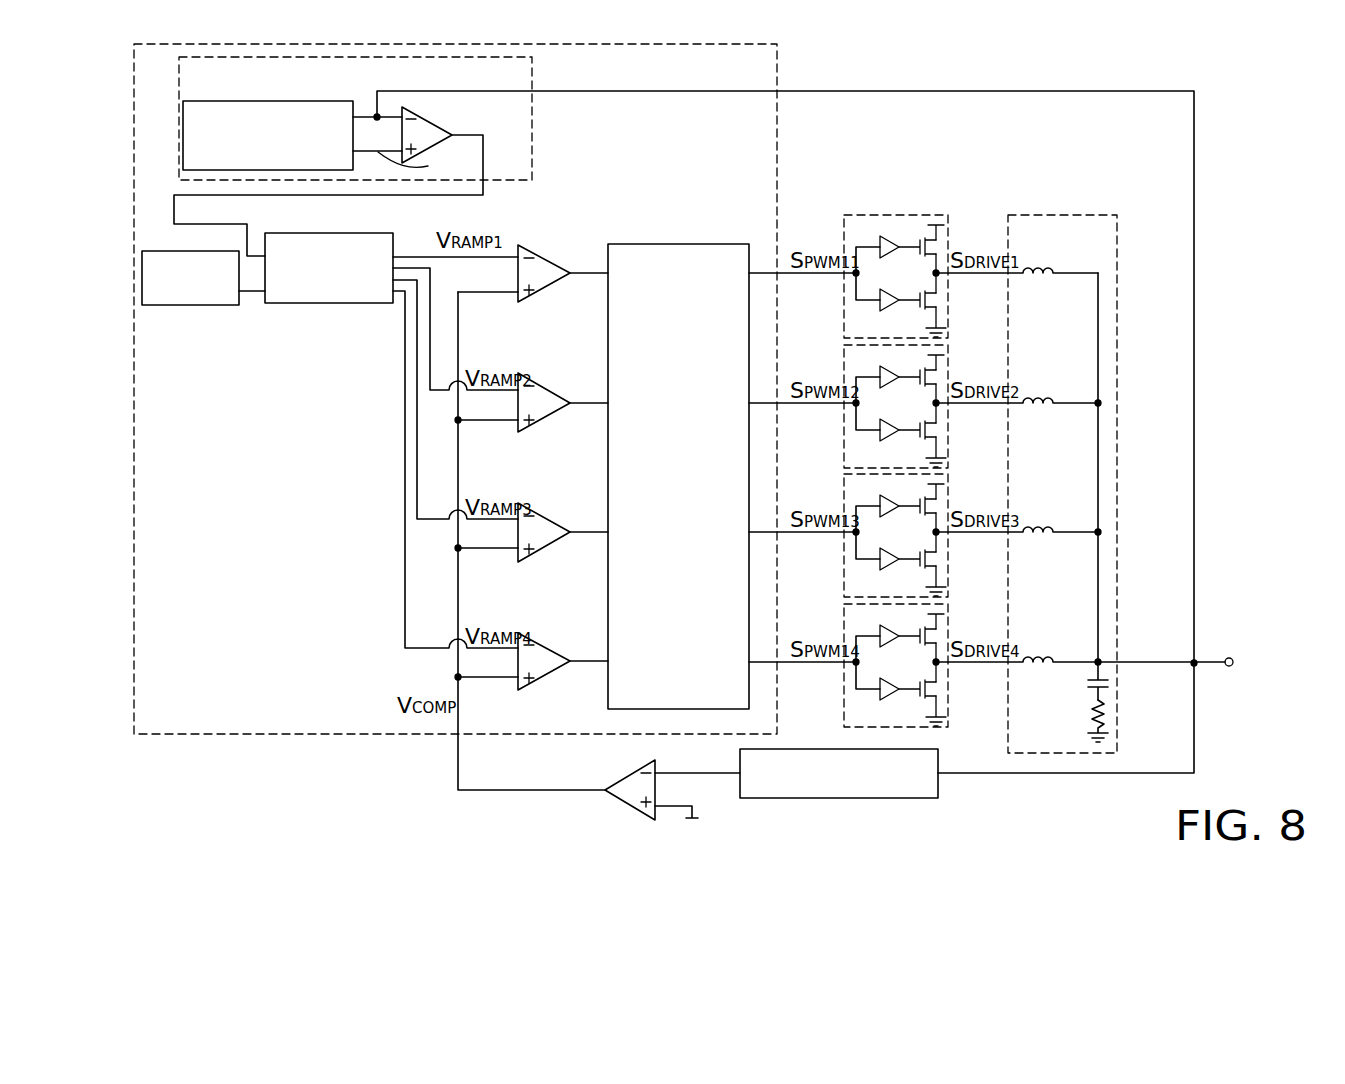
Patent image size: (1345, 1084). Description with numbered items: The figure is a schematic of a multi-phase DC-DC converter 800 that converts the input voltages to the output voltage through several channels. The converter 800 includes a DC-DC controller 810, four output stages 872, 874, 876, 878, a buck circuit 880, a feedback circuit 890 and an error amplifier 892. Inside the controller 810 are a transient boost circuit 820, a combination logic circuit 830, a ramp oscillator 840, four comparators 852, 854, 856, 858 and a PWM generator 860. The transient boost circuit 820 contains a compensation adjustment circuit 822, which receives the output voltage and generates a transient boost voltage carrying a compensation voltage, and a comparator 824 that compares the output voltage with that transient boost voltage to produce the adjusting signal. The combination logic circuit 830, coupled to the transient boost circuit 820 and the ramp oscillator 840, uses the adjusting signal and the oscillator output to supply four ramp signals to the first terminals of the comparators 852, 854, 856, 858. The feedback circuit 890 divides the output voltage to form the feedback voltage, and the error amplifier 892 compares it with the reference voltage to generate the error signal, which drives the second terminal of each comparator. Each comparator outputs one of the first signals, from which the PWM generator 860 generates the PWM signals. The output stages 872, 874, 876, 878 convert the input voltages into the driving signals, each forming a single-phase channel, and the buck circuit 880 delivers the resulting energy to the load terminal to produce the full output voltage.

The multi-phase DC-DC converter 800 is at (1244, 772).
The DC-DC controller 810 is at (779, 66).
The transient boost circuit 820 is at (533, 118).
The compensation adjustment circuit 822 is at (269, 100).
The comparator 824 is at (432, 120).
The combination logic circuit 830 is at (335, 304).
The ramp oscillator 840 is at (185, 306).
The comparator 852 is at (544, 257).
The comparator 854 is at (543, 387).
The comparator 856 is at (543, 516).
The comparator 858 is at (543, 645).
The PWM generator 860 is at (663, 244).
The output stage 872 is at (879, 336).
The output stage 874 is at (879, 336).
The output stage 876 is at (896, 536).
The output stage 878 is at (896, 666).
The buck circuit 880 is at (1053, 214).
The feedback circuit 890 is at (940, 782).
The error amplifier 892 is at (640, 769).